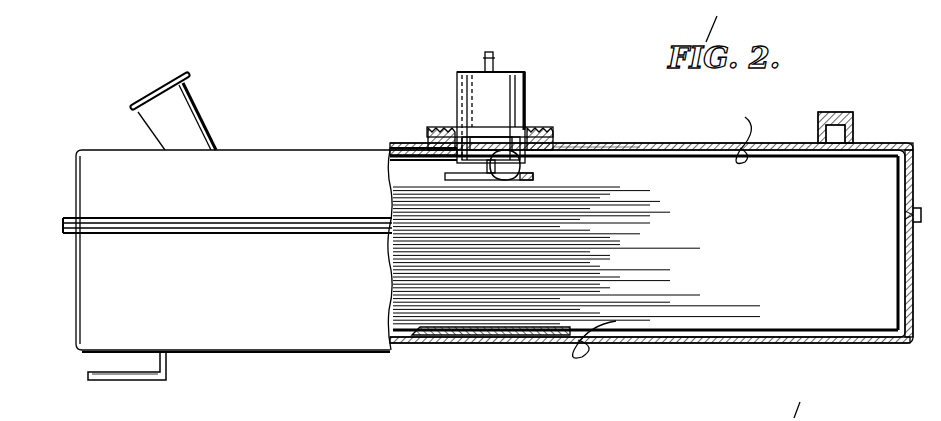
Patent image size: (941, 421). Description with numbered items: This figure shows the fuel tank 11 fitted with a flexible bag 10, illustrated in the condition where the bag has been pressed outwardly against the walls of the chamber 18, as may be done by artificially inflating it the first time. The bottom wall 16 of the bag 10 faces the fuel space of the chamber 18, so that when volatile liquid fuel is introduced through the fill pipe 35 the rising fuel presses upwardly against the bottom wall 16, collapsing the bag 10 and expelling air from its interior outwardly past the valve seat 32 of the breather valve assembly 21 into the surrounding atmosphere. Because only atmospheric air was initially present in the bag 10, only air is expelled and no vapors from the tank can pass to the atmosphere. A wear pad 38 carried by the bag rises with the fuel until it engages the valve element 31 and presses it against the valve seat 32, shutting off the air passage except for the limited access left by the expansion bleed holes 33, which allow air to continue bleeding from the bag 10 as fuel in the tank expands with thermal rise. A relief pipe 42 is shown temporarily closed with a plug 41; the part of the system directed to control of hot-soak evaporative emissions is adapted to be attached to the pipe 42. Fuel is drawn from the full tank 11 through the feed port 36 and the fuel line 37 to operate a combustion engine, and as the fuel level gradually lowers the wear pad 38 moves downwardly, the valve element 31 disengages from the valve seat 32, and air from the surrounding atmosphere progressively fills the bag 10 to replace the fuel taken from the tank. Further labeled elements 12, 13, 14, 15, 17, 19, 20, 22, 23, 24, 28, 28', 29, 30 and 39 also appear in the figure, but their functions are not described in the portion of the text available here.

The flexible bag 10 is at (655, 239).
The fuel tank 11 is at (84, 146).
The outer shell wall 12 is at (761, 146).
The bottom shell wall 13 is at (815, 344).
The side wall 14 is at (80, 288).
The top liner 15 is at (672, 155).
The bottom wall 16 is at (685, 343).
The bottom liner 17 is at (898, 297).
The chamber 18 is at (737, 134).
The liquid contents 19 is at (582, 255).
The plate 20 is at (526, 179).
The breather valve assembly 21 is at (495, 99).
The flange 22 is at (436, 128).
The top wall section 23 is at (425, 148).
The nut 24 is at (450, 126).
The valve body wall 28 is at (435, 108).
The valve body wall 28' is at (543, 101).
The valve passage 29 is at (472, 82).
The stem 30 is at (494, 60).
The valve element 31 is at (452, 178).
The valve seat 32 is at (521, 162).
The expansion bleed holes 33 is at (575, 148).
The fill pipe 35 is at (183, 118).
The feed port 36 is at (170, 363).
The fuel line 37 is at (106, 382).
The wear pad 38 is at (478, 338).
The bottom section 39 is at (606, 333).
The plug 41 is at (836, 113).
The relief pipe 42 is at (850, 135).